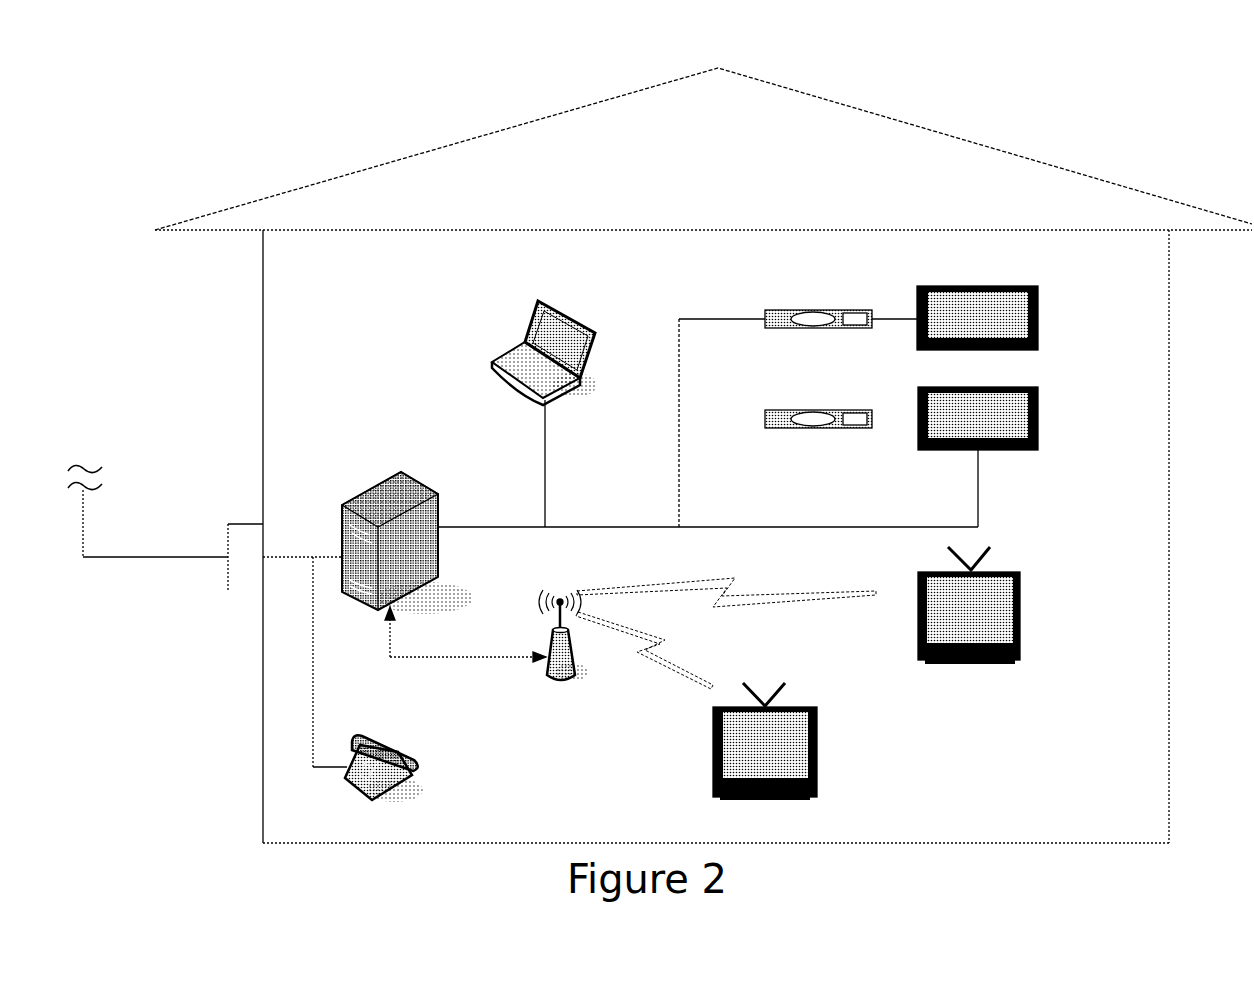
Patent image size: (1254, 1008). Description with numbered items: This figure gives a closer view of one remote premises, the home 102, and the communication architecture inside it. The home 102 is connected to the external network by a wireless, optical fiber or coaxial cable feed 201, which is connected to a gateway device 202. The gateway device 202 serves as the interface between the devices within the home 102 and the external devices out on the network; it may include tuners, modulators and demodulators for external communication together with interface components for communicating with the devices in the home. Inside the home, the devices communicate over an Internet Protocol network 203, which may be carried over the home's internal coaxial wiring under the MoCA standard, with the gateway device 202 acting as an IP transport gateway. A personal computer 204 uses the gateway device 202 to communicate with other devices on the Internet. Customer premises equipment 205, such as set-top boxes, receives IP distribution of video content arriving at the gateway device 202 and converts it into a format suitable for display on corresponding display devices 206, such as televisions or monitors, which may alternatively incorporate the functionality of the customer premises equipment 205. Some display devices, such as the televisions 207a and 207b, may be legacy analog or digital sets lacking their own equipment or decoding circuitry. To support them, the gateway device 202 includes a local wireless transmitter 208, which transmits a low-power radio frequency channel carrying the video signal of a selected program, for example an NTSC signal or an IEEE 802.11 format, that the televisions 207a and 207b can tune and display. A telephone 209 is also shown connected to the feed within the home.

The home 102 is at (703, 432).
The coaxial cable feed 201 is at (204, 510).
The gateway device 202 is at (385, 537).
The Internet Protocol network 203 is at (704, 423).
The personal computer 204 is at (510, 414).
The customer premises equipment 205 is at (818, 328).
The display device 206 is at (917, 386).
The television 207a is at (924, 605).
The television 207b is at (810, 738).
The local wireless transmitter 208 is at (630, 640).
The telephone 209 is at (402, 679).